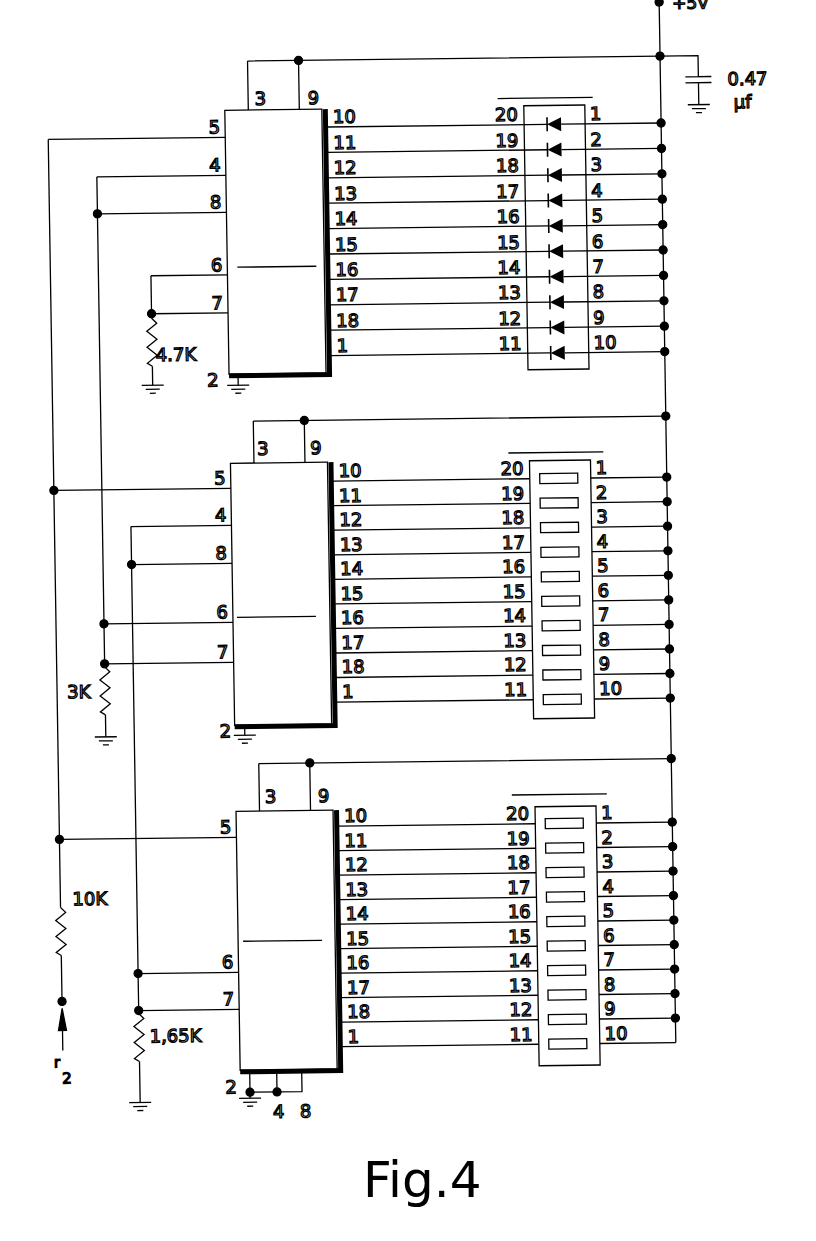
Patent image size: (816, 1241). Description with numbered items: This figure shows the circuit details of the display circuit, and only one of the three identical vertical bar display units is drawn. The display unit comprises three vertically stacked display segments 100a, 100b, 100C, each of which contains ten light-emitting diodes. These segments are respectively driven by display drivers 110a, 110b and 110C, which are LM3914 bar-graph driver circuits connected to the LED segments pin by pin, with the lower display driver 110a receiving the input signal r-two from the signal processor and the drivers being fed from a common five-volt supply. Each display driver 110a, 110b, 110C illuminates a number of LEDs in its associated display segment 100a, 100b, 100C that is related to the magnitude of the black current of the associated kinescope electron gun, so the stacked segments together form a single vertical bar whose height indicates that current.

The display driver 110C is at (316, 381).
The display segment 100C is at (583, 377).
The display driver 110b is at (322, 731).
The display segment 100b is at (582, 726).
The display driver 110a is at (322, 1076).
The display segment 100a is at (583, 1073).